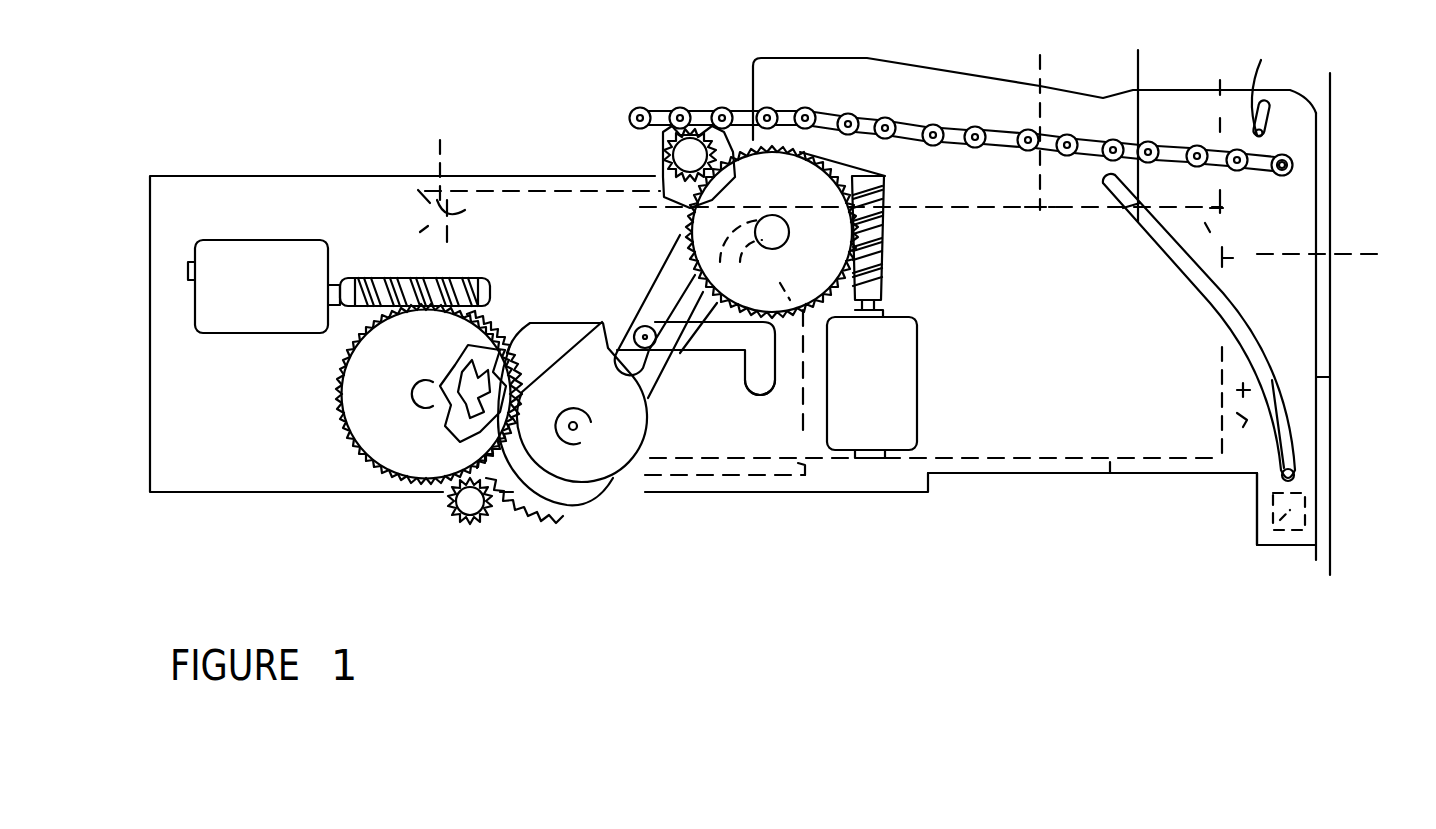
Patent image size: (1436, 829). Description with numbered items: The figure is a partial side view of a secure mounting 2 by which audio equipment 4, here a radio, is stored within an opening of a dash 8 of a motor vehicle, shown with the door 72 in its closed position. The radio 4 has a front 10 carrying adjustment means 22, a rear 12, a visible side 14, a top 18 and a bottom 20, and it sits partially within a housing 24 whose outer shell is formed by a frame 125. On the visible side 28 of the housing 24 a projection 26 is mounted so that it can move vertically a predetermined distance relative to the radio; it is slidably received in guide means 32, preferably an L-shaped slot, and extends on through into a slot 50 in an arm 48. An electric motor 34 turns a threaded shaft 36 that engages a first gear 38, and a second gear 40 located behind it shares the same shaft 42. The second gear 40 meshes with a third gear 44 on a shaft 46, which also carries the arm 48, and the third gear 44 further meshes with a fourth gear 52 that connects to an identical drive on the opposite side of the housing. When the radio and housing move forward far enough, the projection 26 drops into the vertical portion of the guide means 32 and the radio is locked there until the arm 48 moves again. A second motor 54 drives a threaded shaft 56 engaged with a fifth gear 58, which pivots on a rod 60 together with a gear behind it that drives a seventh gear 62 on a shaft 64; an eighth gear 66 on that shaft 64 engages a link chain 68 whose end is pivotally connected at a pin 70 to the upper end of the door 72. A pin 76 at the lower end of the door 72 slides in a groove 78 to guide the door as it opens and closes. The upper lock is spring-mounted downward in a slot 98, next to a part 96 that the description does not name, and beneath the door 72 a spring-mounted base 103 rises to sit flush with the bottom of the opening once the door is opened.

The secure mounting 2 is at (201, 168).
The audio equipment 4 is at (1135, 123).
The dash 8 is at (1332, 131).
The front 10 is at (1340, 248).
The rear 12 is at (441, 172).
The side 14 is at (1208, 63).
The top 18 is at (1040, 117).
The bottom 20 is at (1100, 490).
The adjustment means 22 is at (1360, 370).
The housing 24 is at (405, 170).
The projection 26 is at (650, 340).
The side 28 is at (735, 437).
The guide means 32 is at (758, 380).
The electric motor 34 is at (226, 268).
The threaded shaft 36 is at (390, 273).
The first gear 38 is at (400, 437).
The second gear 40 is at (455, 410).
The shaft 42 is at (430, 396).
The third gear 44 is at (530, 506).
The shaft 46 is at (578, 430).
The arm 48 is at (640, 308).
The slot 50 is at (678, 268).
The fourth gear 52 is at (472, 502).
The second motor 54 is at (905, 421).
The threaded shaft 56 is at (885, 262).
The fifth gear 58 is at (816, 200).
The rod 60 is at (772, 230).
The seventh gear 62 is at (700, 140).
The shaft 64 is at (692, 155).
The eighth gear 66 is at (665, 162).
The link chain 68 is at (945, 135).
The pin 70 is at (1292, 164).
The door 72 is at (1283, 433).
The pin 76 is at (1296, 475).
The groove 78 is at (1207, 307).
The spring 96 is at (1258, 79).
The slot 98 is at (1269, 110).
The spring-mounted base 103 is at (1250, 525).
The frame 125 is at (895, 495).